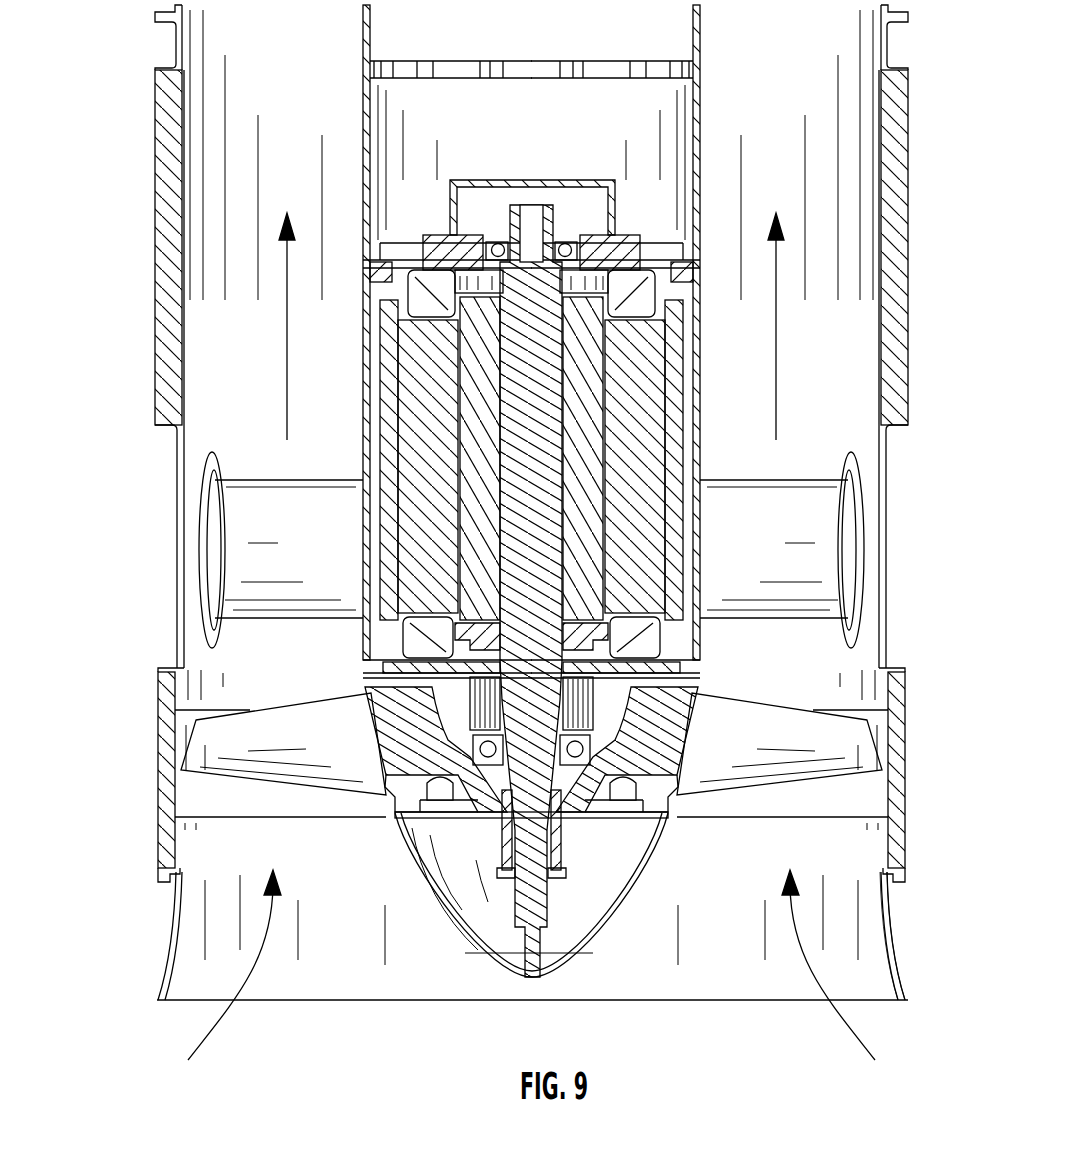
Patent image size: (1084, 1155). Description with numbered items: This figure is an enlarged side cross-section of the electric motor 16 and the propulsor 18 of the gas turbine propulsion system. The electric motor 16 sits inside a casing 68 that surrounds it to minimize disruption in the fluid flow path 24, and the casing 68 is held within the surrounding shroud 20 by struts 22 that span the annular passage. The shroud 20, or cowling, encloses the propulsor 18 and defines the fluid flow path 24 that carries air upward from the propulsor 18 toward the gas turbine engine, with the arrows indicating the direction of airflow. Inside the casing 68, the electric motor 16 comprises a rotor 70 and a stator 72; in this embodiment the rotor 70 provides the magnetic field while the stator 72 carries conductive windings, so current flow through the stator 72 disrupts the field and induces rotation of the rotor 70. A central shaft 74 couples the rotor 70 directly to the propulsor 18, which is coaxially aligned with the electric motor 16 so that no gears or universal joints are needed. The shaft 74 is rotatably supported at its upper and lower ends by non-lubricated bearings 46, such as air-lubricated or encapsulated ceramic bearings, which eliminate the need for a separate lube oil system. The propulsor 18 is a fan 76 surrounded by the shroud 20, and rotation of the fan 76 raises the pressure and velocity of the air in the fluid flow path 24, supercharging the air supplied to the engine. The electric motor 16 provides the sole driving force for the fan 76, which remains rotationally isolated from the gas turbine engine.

The electric motor 16 is at (140, 265).
The propulsor 18 is at (140, 672).
The shroud 20 is at (892, 943).
The struts 22 is at (825, 513).
The fluid flow path 24 is at (785, 362).
The non-lubricated bearings 46 is at (573, 252).
The casing 68 is at (365, 412).
The rotor 70 is at (480, 567).
The stator 72 is at (423, 537).
The shaft 74 is at (533, 585).
The fan 76 is at (273, 760).